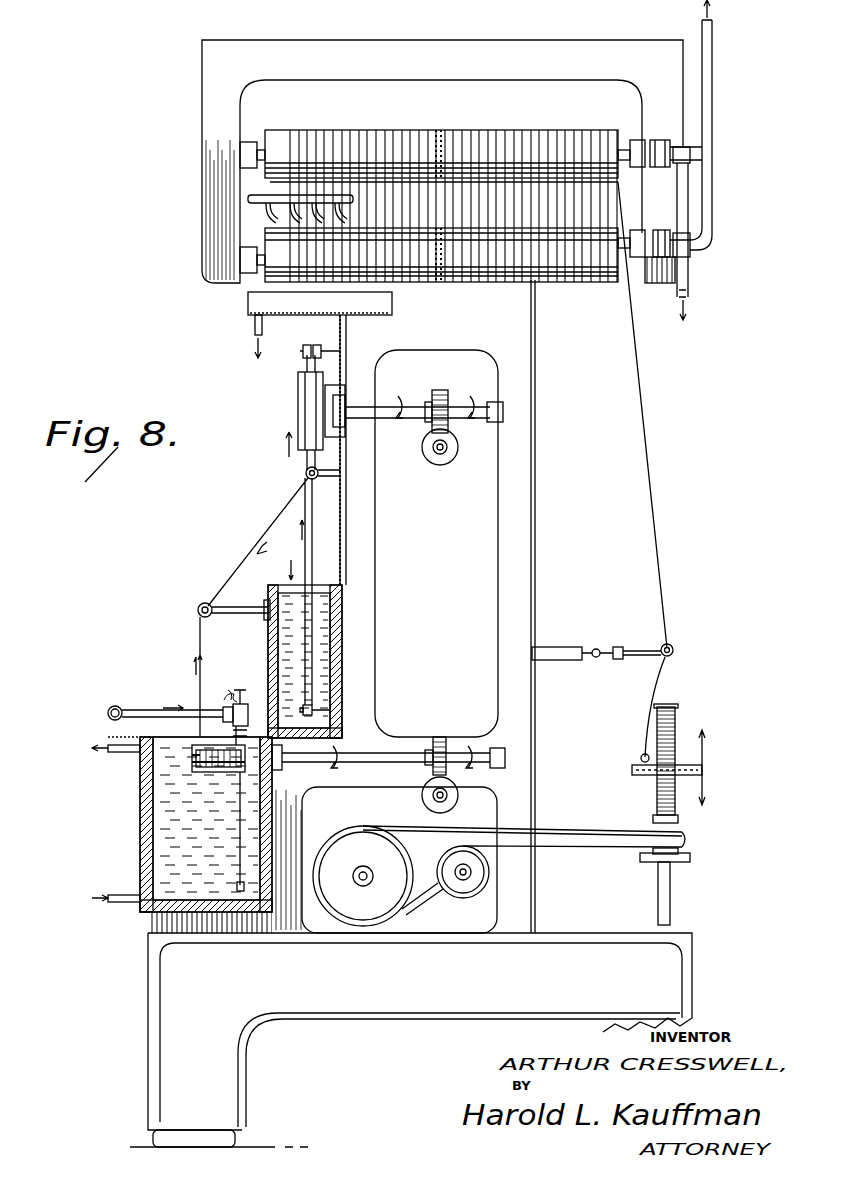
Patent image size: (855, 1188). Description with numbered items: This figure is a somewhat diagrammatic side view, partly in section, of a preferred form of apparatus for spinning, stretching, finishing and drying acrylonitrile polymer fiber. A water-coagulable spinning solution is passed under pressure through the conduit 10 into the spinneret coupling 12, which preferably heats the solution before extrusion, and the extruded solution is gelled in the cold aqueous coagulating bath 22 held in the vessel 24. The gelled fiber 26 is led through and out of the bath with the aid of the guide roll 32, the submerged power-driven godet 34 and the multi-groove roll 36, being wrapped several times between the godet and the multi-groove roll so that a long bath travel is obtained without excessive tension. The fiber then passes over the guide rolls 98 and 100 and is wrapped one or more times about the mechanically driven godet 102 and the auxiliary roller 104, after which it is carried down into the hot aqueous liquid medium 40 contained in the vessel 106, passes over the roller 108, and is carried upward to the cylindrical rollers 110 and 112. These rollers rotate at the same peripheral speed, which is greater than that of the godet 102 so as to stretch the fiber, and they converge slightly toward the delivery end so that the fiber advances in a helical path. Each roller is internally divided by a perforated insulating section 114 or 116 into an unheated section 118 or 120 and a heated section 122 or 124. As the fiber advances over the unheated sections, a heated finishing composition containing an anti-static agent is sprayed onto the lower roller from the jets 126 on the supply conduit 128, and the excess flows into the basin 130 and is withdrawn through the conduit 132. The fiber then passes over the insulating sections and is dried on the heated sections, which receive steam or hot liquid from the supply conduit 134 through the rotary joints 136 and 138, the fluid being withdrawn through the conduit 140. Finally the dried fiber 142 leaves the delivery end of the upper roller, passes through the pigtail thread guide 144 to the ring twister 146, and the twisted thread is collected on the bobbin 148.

The conduit 10 is at (140, 710).
The spinneret coupling 12 is at (247, 703).
The coagulating bath 22 is at (166, 820).
The vessel 24 is at (134, 841).
The gelled fiber 26 is at (200, 644).
The guide roll 32 is at (237, 886).
The godet 34 is at (198, 746).
The multi-groove roll 36 is at (192, 766).
The hot aqueous liquid medium 40 is at (278, 640).
The guide roll 98 is at (200, 608).
The guide roll 100 is at (306, 474).
The godet 102 is at (298, 408).
The auxiliary roller 104 is at (303, 352).
The vessel 106 is at (278, 667).
The roller 108 is at (313, 706).
The cylindrical roller 110 is at (255, 133).
The cylindrical roller 112 is at (255, 238).
The insulating section 114 is at (438, 135).
The insulating section 116 is at (439, 282).
The unheated section 118 is at (288, 136).
The unheated section 120 is at (268, 272).
The heated section 122 is at (574, 132).
The heated section 124 is at (568, 277).
The jets 126 is at (263, 218).
The supply conduit 128 is at (248, 198).
The basin 130 is at (258, 308).
The conduit 132 is at (254, 333).
The supply conduit 134 is at (712, 98).
The rotary joint 136 is at (660, 140).
The rotary joint 138 is at (662, 230).
The conduit 140 is at (690, 268).
The dried fiber 142 is at (663, 560).
The pigtail thread guide 144 is at (672, 648).
The ring twister 146 is at (626, 772).
The bobbin 148 is at (678, 706).